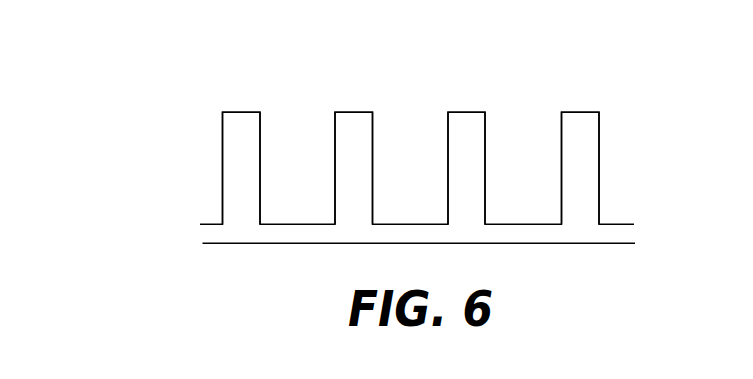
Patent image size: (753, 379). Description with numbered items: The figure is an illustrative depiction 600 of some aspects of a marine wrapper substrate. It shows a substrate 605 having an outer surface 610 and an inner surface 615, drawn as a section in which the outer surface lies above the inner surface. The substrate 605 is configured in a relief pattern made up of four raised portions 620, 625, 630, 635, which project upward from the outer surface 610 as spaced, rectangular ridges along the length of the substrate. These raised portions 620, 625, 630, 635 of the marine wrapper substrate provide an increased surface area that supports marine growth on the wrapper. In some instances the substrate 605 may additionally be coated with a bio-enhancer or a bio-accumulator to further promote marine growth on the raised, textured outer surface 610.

The illustrative depiction 600 is at (64, 34).
The substrate 605 is at (210, 214).
The outer surface 610 is at (625, 222).
The inner surface 615 is at (614, 245).
The raised portion 620 is at (246, 111).
The raised portion 625 is at (359, 111).
The raised portion 630 is at (472, 111).
The raised portion 635 is at (580, 111).